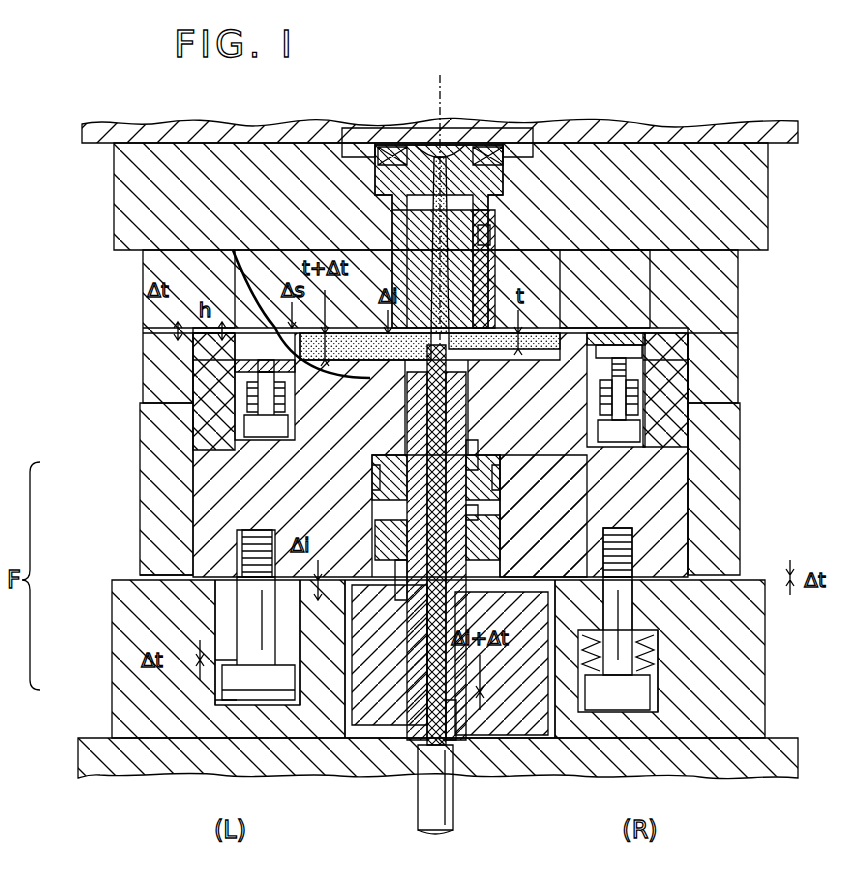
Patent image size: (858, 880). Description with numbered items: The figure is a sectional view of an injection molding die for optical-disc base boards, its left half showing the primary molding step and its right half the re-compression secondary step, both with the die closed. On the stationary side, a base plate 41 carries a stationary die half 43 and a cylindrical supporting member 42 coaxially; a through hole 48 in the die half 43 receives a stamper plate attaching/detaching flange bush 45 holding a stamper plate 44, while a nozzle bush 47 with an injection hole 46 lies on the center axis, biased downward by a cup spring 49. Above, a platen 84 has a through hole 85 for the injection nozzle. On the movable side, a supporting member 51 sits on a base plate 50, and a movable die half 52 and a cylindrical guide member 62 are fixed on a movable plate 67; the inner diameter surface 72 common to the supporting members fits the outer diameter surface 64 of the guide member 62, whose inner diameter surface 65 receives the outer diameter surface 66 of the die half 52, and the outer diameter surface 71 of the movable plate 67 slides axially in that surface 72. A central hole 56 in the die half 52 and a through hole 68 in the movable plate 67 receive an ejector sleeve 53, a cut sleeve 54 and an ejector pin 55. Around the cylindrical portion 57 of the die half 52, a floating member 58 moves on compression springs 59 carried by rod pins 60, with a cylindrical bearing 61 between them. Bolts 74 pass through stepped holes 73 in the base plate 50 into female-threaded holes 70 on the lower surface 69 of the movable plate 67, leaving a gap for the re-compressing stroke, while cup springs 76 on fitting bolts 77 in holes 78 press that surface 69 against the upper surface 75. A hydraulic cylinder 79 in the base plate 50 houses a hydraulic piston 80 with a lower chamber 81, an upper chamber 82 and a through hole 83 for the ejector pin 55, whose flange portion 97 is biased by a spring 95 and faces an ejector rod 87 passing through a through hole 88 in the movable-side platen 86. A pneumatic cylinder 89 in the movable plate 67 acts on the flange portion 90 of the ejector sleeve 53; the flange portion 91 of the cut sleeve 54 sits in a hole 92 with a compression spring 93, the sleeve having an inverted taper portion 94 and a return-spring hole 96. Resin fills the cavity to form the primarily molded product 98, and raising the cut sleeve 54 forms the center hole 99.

The base plate 41 is at (770, 203).
The cylindrical supporting member 42 is at (737, 290).
The stationary die half 43 is at (600, 248).
The stamper plate 44 is at (590, 328).
The stamper plate attaching/detaching flange bush 45 is at (487, 325).
The injection hole 46 is at (427, 206).
The nozzle bush 47 is at (452, 130).
The through hole 48 is at (400, 232).
The cup spring 49 is at (376, 160).
The base plate 50 is at (760, 712).
The movable side supporting member 51 is at (720, 460).
The movable side die half 52 is at (640, 352).
The ejector sleeve 53 is at (460, 380).
The cut sleeve 54 is at (480, 400).
The ejector pin 55 is at (500, 455).
The central hole 56 is at (478, 446).
The cylindrical portion 57 is at (636, 372).
The floating member 58 is at (690, 332).
The compression springs 59 is at (642, 396).
The rod pins 60 is at (642, 422).
The cylindrical bearing 61 is at (266, 437).
The guide member 62 is at (200, 435).
The outer diameter surface 64 is at (195, 345).
The inner diameter surface 65 is at (232, 392).
The outer diameter surface 66 is at (240, 410).
The movable plate 67 is at (700, 476).
The through hole 68 is at (490, 520).
The lower surface 69 is at (150, 585).
The female-threaded holes 70 is at (245, 540).
The outer diameter surface 71 is at (200, 490).
The inner diameter surface 72 is at (232, 560).
The holes 73 is at (225, 640).
The bolts 74 is at (230, 692).
The upper surface 75 is at (700, 620).
The cup springs 76 is at (650, 660).
The fitting bolts 77 is at (640, 690).
The holes 78 is at (655, 762).
The hydraulic cylinder 79 is at (285, 706).
The hydraulic piston 80 is at (345, 727).
The lower chamber 81 is at (548, 702).
The upper chamber 82 is at (292, 692).
The through hole 83 is at (470, 715).
The platen 84 is at (98, 128).
The through hole 85 is at (395, 128).
The platen 86 is at (95, 760).
The ejector rod 87 is at (453, 822).
The through hole 88 is at (418, 780).
The pneumatic cylinder 89 is at (560, 506).
The flange portion 90 is at (486, 480).
The flange portion 91 is at (496, 540).
The hole 92 is at (390, 525).
The compression spring 93 is at (396, 582).
The inverted taper portion 94 is at (240, 252).
The spring 95 is at (520, 712).
The hole 96 is at (385, 470).
The flange portion 97 is at (420, 610).
The primarily molded product 98 is at (290, 250).
The center hole 99 is at (565, 300).